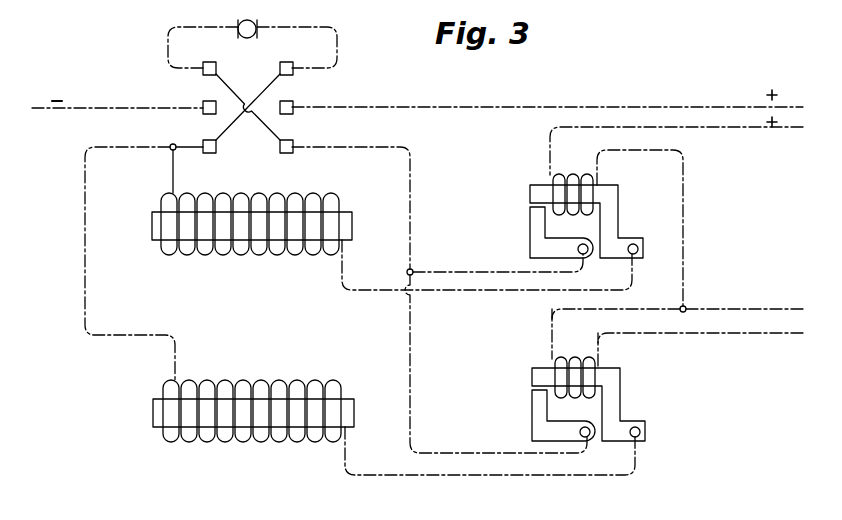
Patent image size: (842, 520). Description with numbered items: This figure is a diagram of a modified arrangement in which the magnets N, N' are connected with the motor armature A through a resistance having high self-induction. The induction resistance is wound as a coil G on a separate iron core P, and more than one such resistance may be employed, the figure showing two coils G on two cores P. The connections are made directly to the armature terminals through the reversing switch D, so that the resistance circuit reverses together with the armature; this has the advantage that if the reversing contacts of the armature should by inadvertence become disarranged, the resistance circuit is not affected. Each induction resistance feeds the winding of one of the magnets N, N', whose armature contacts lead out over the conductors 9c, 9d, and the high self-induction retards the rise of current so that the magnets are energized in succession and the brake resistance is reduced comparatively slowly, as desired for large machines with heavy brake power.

The armature A is at (252, 34).
The reversing switch D is at (231, 107).
The electromagnet coil G is at (276, 365).
The iron core P is at (354, 412).
The magnet N is at (666, 216).
The magnet N' is at (591, 375).
The conductor 9c is at (677, 301).
The conductor 9d is at (700, 345).